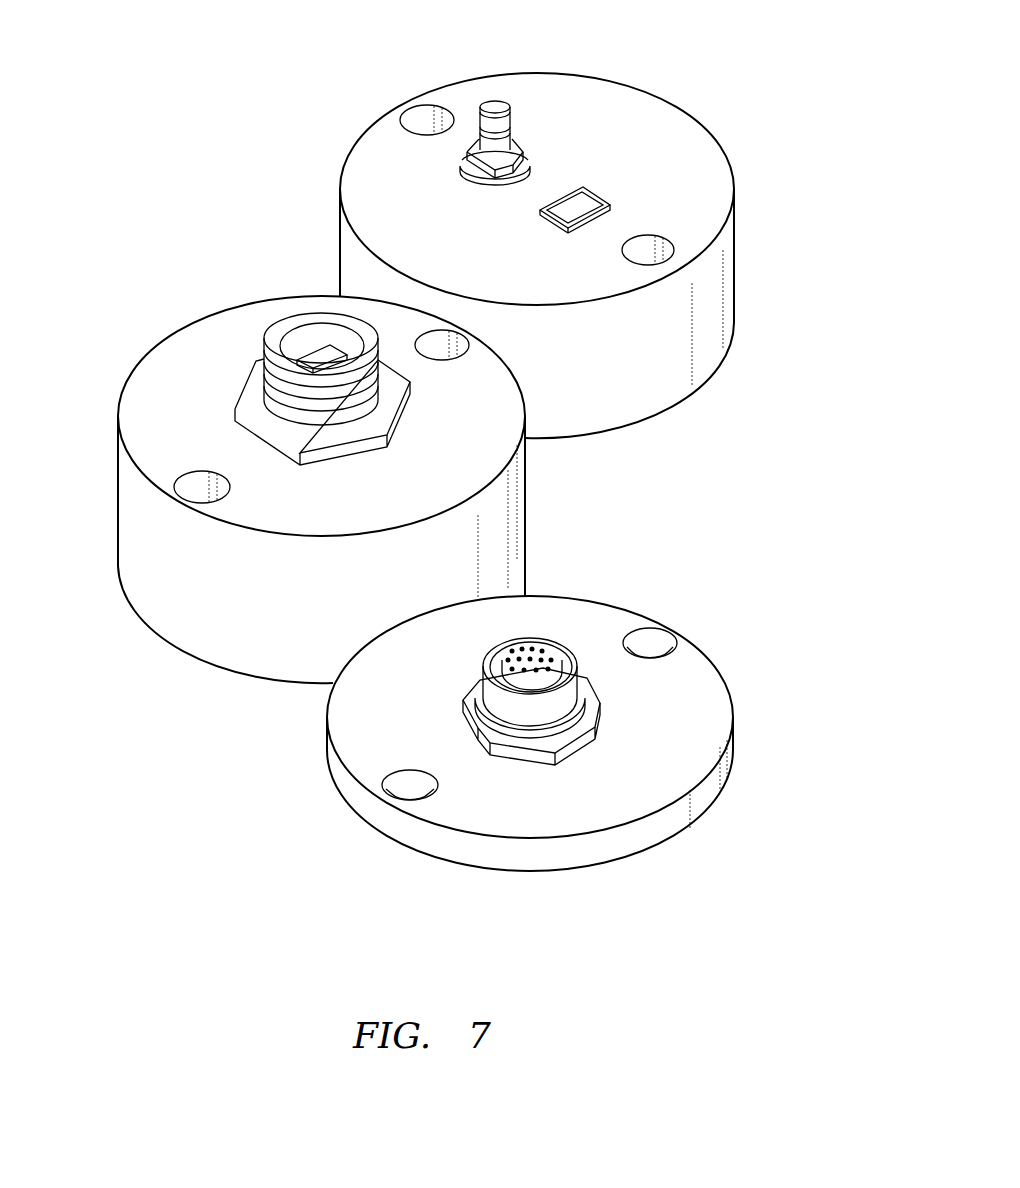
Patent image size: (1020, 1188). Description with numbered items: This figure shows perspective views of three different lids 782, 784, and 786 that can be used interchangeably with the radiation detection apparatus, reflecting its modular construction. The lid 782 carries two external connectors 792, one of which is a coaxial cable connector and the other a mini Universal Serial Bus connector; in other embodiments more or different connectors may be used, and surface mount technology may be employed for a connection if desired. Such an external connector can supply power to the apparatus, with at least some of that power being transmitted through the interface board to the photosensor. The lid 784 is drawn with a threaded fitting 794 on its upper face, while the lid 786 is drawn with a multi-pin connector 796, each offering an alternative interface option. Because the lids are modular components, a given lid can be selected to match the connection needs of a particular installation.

The lid 782 is at (405, 57).
The external connectors 792 is at (537, 130).
The lid 784 is at (125, 350).
The threaded fitting 794 is at (425, 413).
The lid 786 is at (310, 757).
The multi-pin connector 796 is at (572, 640).